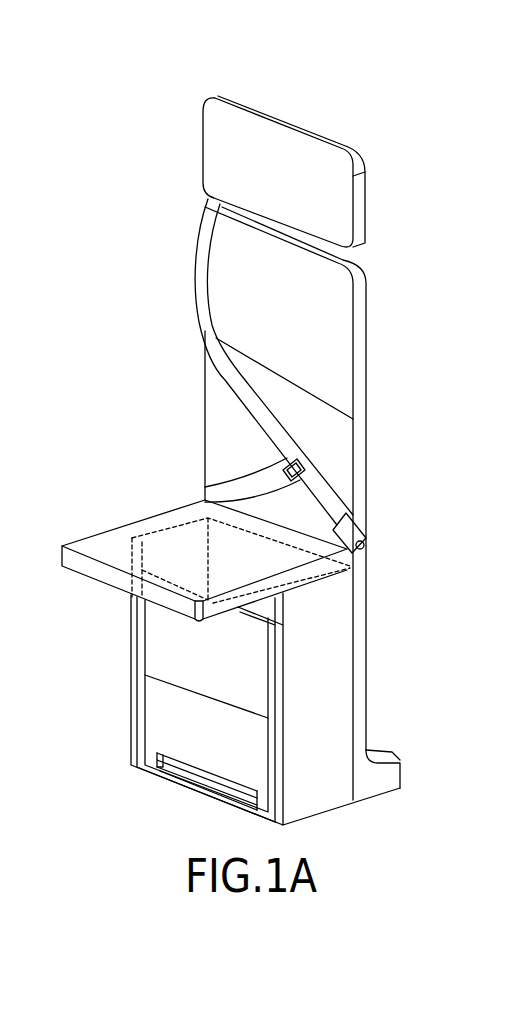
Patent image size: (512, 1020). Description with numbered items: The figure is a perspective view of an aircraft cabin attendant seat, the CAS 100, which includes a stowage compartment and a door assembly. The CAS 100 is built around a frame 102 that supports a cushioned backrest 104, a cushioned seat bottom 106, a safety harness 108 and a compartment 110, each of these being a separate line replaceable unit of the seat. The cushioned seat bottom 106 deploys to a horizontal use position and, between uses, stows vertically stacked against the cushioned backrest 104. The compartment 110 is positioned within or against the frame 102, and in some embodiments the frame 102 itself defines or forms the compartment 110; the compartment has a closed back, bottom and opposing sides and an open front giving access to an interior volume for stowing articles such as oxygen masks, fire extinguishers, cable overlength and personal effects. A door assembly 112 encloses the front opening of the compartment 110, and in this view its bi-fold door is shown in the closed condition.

The aircraft cabin attendant seat (CAS) 100 is at (400, 97).
The frame 102 is at (367, 357).
The cushioned backrest 104 is at (343, 306).
The cushioned seat bottom 106 is at (98, 543).
The safety harness 108 is at (198, 273).
The compartment 110 is at (340, 628).
The door assembly 112 is at (117, 726).